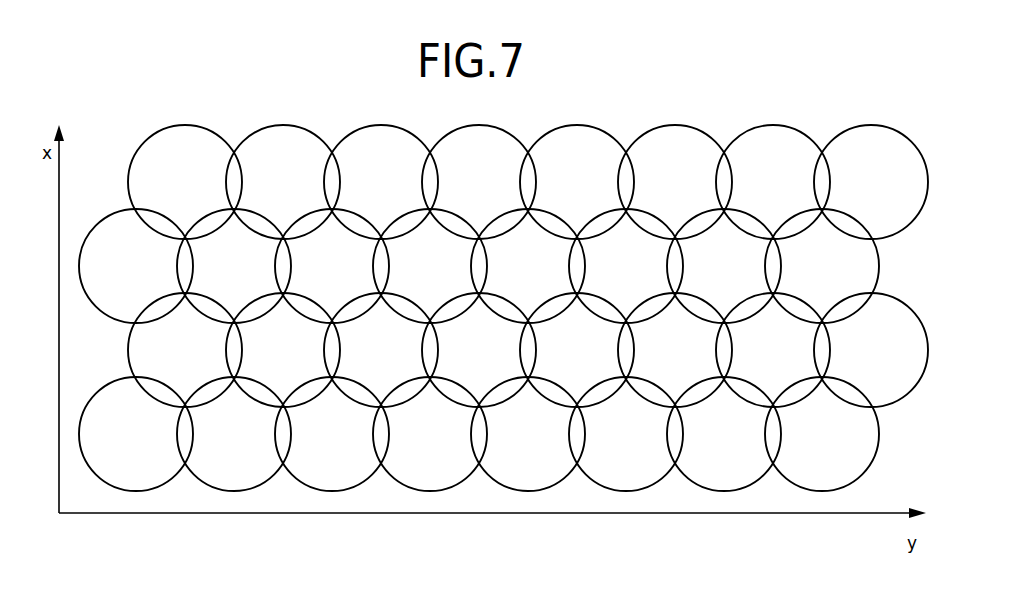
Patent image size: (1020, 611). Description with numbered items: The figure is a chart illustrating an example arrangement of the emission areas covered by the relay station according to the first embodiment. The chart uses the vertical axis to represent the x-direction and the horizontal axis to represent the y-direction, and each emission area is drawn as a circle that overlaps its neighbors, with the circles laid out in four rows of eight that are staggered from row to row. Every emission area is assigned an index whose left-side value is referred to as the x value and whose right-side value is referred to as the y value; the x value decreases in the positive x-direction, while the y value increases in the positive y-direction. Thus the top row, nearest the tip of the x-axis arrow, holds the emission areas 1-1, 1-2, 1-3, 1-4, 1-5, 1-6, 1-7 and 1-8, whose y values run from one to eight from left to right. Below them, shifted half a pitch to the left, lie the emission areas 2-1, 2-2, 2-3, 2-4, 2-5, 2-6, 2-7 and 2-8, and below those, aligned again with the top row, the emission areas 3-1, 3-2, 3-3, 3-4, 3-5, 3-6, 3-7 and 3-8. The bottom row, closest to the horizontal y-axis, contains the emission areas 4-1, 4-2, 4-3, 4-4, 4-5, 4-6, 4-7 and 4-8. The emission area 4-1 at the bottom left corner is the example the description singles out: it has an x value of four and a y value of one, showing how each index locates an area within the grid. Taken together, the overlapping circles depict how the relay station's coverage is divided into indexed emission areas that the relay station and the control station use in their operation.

The emission area 1-1 is at (185, 182).
The emission area 1-2 is at (283, 182).
The emission area 1-3 is at (381, 182).
The emission area 1-4 is at (479, 182).
The emission area 1-5 is at (577, 182).
The emission area 1-6 is at (675, 182).
The emission area 1-7 is at (773, 182).
The emission area 1-8 is at (871, 182).
The emission area 2-1 is at (136, 266).
The emission area 2-2 is at (234, 266).
The emission area 2-3 is at (332, 266).
The emission area 2-4 is at (430, 266).
The emission area 2-5 is at (528, 266).
The emission area 2-6 is at (626, 266).
The emission area 2-7 is at (724, 266).
The emission area 2-8 is at (822, 266).
The emission area 3-1 is at (185, 350).
The emission area 3-2 is at (283, 350).
The emission area 3-3 is at (381, 350).
The emission area 3-4 is at (479, 350).
The emission area 3-5 is at (577, 350).
The emission area 3-6 is at (675, 350).
The emission area 3-7 is at (773, 350).
The emission area 3-8 is at (871, 350).
The emission area 4-1 is at (136, 434).
The emission area 4-2 is at (234, 434).
The emission area 4-3 is at (332, 434).
The emission area 4-4 is at (430, 434).
The emission area 4-5 is at (528, 434).
The emission area 4-6 is at (626, 434).
The emission area 4-7 is at (724, 434).
The emission area 4-8 is at (822, 434).